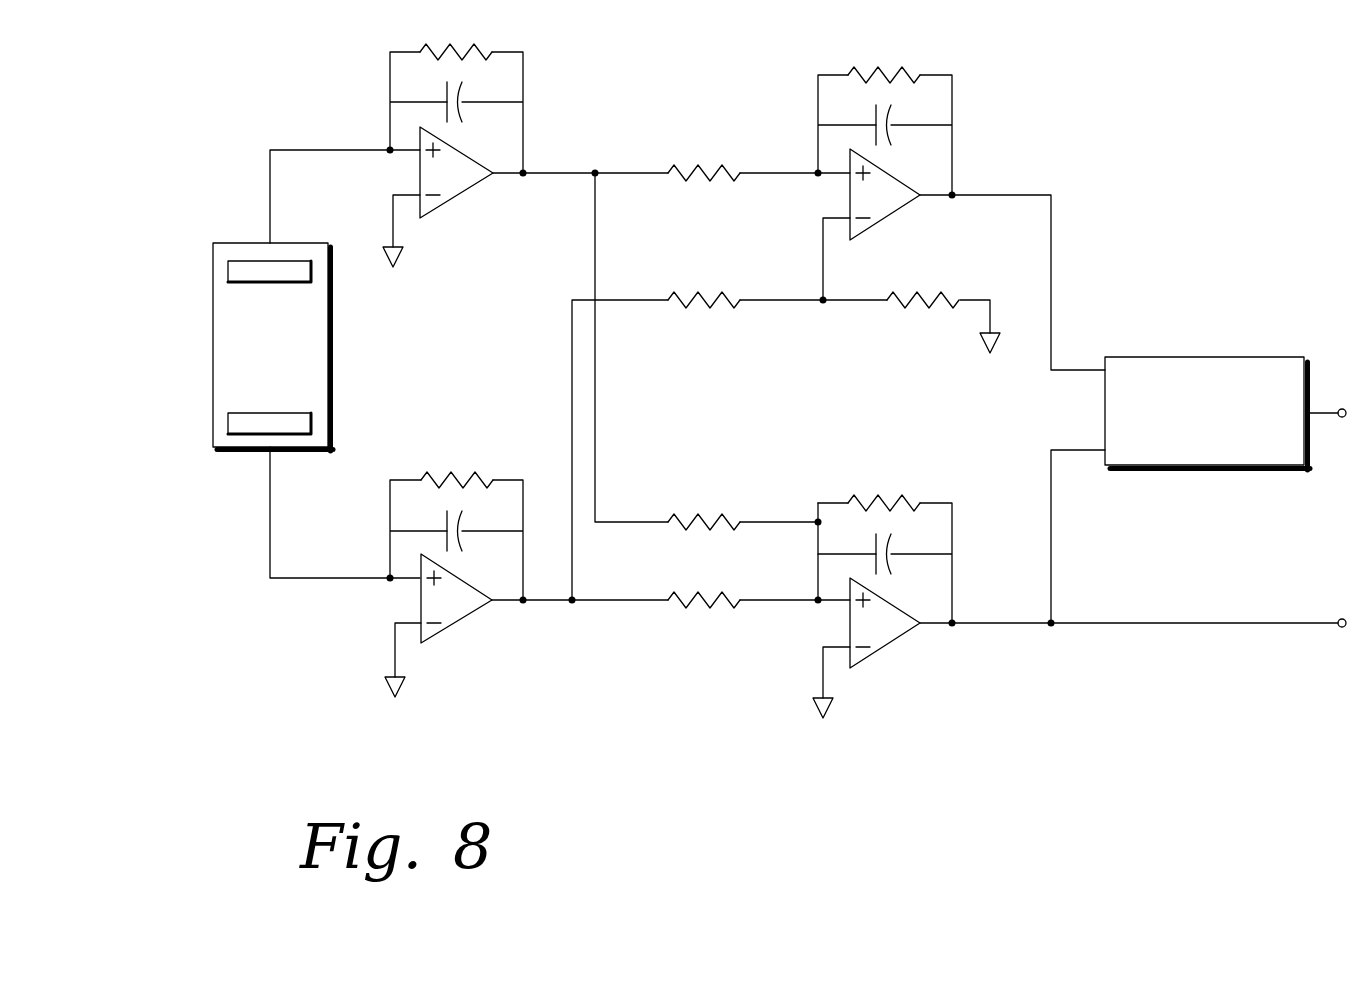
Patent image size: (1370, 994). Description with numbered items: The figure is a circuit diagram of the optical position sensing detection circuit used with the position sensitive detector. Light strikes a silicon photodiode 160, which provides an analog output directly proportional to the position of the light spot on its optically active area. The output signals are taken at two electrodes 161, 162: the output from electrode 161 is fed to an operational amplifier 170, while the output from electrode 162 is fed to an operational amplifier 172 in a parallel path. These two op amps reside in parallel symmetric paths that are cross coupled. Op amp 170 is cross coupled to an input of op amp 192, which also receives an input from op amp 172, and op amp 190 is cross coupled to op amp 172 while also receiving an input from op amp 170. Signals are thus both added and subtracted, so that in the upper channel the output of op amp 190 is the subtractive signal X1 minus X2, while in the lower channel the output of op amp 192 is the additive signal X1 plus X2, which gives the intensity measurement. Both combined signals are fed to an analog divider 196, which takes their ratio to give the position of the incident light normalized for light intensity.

The silicon photodiode 160 is at (332, 348).
The electrode 161 is at (242, 268).
The electrode 162 is at (242, 421).
The operational amplifier 170 is at (473, 185).
The operational amplifier 172 is at (473, 612).
The operational amplifier 190 is at (903, 206).
The operational amplifier 192 is at (903, 634).
The analog divider 196 is at (1258, 357).